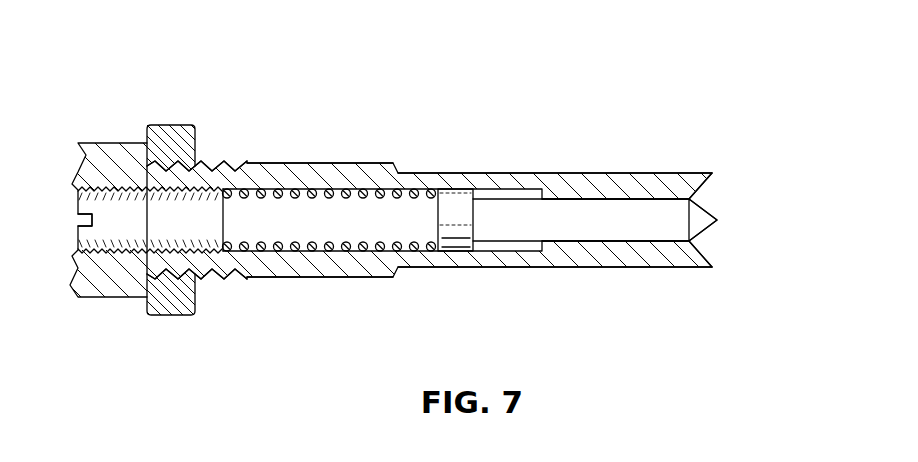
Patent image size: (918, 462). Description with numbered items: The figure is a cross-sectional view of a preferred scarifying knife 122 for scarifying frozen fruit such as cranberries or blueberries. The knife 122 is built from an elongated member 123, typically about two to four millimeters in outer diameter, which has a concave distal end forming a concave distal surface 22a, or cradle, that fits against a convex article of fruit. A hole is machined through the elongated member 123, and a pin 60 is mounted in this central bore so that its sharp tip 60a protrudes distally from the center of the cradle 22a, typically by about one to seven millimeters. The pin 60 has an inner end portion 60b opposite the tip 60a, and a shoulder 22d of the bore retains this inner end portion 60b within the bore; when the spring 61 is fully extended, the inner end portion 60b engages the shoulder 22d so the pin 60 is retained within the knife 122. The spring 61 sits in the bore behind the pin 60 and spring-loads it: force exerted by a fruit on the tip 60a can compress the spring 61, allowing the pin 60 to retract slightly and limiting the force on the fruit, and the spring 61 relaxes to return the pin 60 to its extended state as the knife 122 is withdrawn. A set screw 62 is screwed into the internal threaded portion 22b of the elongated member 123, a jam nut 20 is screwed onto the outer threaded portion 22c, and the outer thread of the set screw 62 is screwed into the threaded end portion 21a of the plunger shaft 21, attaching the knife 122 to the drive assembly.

The jam nut 20 is at (172, 125).
The plunger shaft 21 is at (113, 143).
The threaded end portion of plunger shaft 21a is at (120, 247).
The concave distal surface 22a is at (700, 250).
The internal threaded portion 22b is at (216, 163).
The outer threaded portion 22c is at (237, 163).
The shoulder 22d is at (542, 190).
The pin 60 is at (600, 205).
The sharp tip 60a is at (717, 218).
The inner end portion 60b is at (455, 212).
The spring 61 is at (323, 187).
The set screw 62 is at (105, 227).
The scarifying knife 122 is at (567, 275).
The elongated member 123 is at (578, 180).